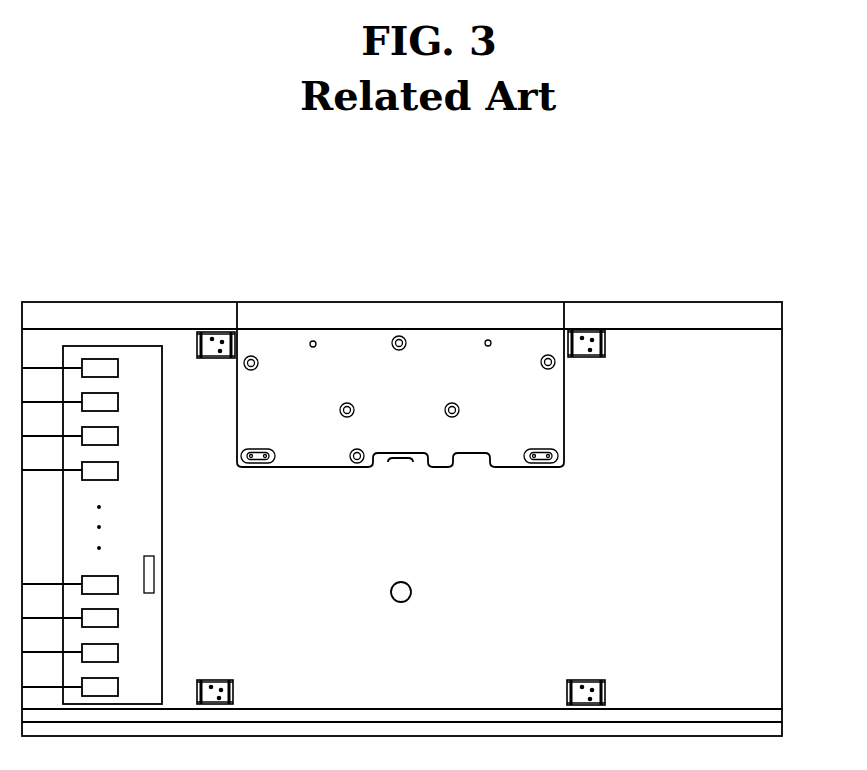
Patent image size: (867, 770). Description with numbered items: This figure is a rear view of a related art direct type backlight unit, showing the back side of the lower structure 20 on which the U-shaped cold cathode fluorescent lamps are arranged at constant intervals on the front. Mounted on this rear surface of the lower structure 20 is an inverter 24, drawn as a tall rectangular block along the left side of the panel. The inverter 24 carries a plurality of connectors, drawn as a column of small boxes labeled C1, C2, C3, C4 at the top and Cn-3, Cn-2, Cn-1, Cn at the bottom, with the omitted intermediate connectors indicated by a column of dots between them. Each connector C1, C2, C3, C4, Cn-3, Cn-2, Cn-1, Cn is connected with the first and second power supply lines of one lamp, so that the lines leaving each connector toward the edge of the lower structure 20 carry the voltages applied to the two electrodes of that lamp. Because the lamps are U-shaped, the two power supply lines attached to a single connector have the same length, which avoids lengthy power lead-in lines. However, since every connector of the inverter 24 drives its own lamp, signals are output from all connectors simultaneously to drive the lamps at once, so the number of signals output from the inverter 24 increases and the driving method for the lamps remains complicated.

The lower structure 20 is at (688, 347).
The inverter 24 is at (138, 522).
The connector C1 is at (112, 366).
The connector C2 is at (112, 400).
The connector C3 is at (112, 434).
The connector C4 is at (112, 468).
The connector Cn-3 is at (110, 586).
The connector Cn-2 is at (110, 619).
The connector Cn-1 is at (110, 654).
The connector Cn is at (110, 688).